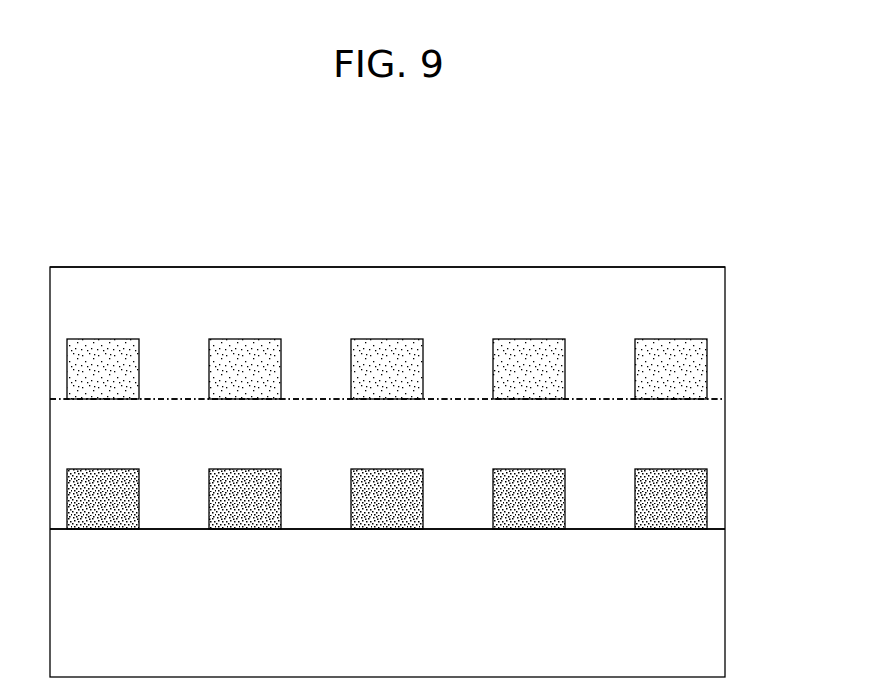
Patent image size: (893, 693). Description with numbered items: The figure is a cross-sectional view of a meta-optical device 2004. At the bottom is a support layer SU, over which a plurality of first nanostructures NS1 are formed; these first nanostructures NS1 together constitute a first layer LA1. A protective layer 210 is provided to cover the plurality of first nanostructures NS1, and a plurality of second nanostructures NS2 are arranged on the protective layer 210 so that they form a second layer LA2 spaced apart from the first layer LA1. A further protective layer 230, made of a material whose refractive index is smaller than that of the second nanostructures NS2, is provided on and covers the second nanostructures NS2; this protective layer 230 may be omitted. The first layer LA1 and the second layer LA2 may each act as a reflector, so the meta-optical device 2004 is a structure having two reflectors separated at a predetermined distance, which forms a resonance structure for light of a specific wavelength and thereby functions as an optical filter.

The meta-optical device 2004 is at (663, 214).
The protective layer 230 is at (713, 290).
The second nanostructures NS2 is at (683, 339).
The second layer LA2 is at (715, 370).
The protective layer 210 is at (713, 417).
The first nanostructures NS1 is at (683, 469).
The first layer LA1 is at (715, 502).
The support layer SU is at (713, 604).